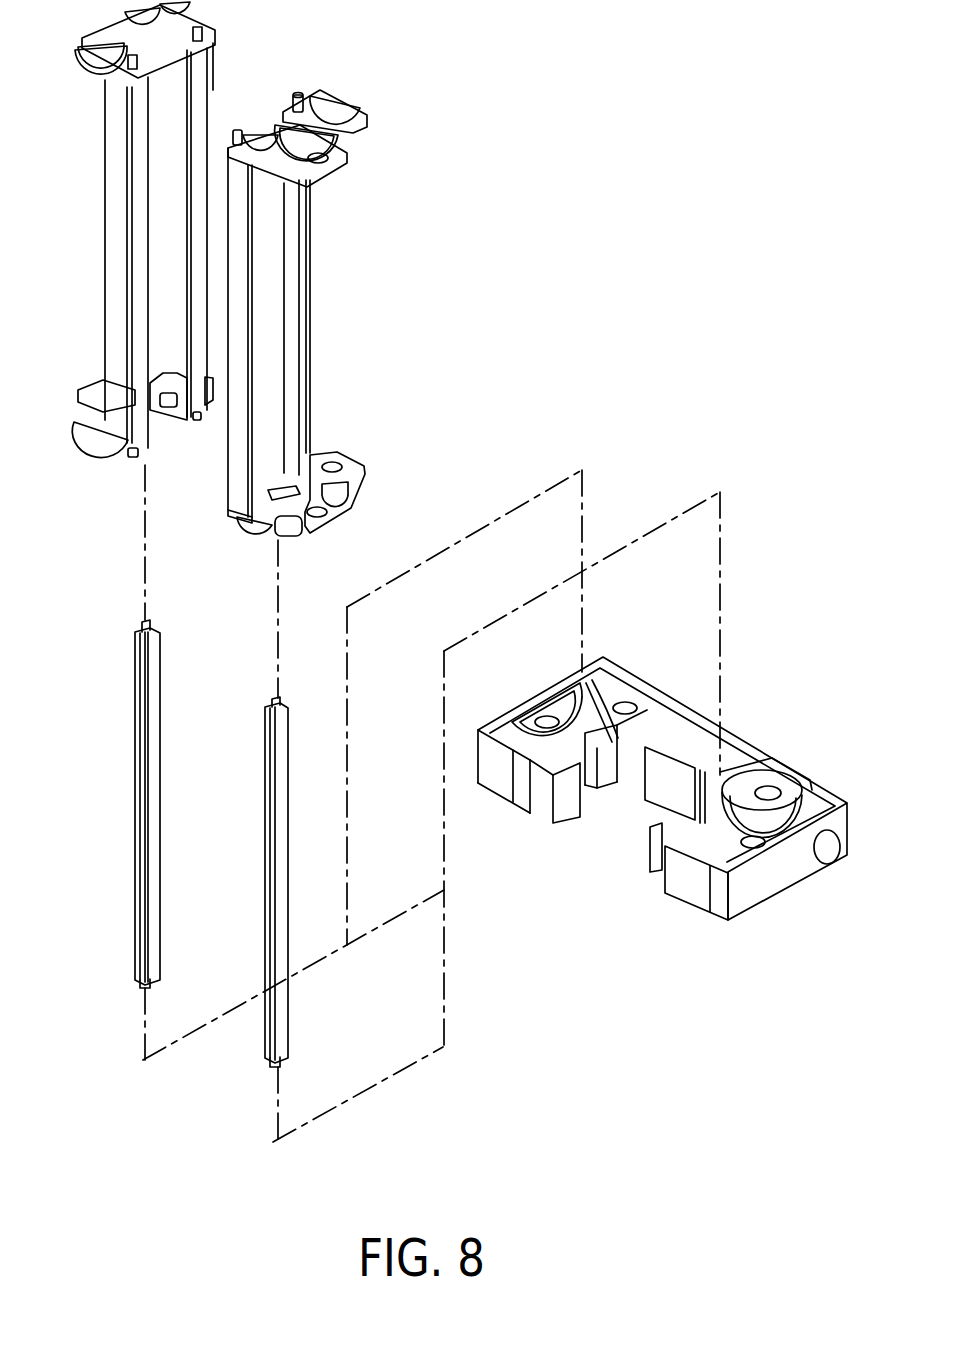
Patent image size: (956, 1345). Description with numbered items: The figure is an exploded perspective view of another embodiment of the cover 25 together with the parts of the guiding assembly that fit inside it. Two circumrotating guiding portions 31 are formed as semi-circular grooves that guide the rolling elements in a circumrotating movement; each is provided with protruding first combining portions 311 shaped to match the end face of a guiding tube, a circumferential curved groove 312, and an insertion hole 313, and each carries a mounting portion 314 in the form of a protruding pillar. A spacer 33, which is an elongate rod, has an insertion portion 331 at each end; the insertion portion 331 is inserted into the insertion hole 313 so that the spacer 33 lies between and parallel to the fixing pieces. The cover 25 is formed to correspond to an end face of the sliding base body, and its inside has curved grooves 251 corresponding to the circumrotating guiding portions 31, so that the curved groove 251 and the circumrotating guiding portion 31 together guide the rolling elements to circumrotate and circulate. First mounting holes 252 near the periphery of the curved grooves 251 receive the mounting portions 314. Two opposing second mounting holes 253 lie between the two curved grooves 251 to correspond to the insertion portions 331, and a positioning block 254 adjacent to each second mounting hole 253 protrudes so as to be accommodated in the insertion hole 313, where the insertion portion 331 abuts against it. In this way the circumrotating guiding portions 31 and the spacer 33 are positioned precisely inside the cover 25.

The cover 25 is at (666, 828).
The curved groove 251 is at (764, 818).
The first mounting hole 252 is at (655, 828).
The second mounting hole 253 is at (752, 763).
The positioning block 254 is at (765, 817).
The circumrotating guiding portion 31 is at (283, 269).
The first combining portion 311 is at (360, 486).
The curved groove 312 is at (350, 461).
The insertion hole 313 is at (357, 437).
The mounting portion 314 is at (300, 92).
The spacer 33 is at (98, 829).
The insertion portion 331 is at (143, 988).